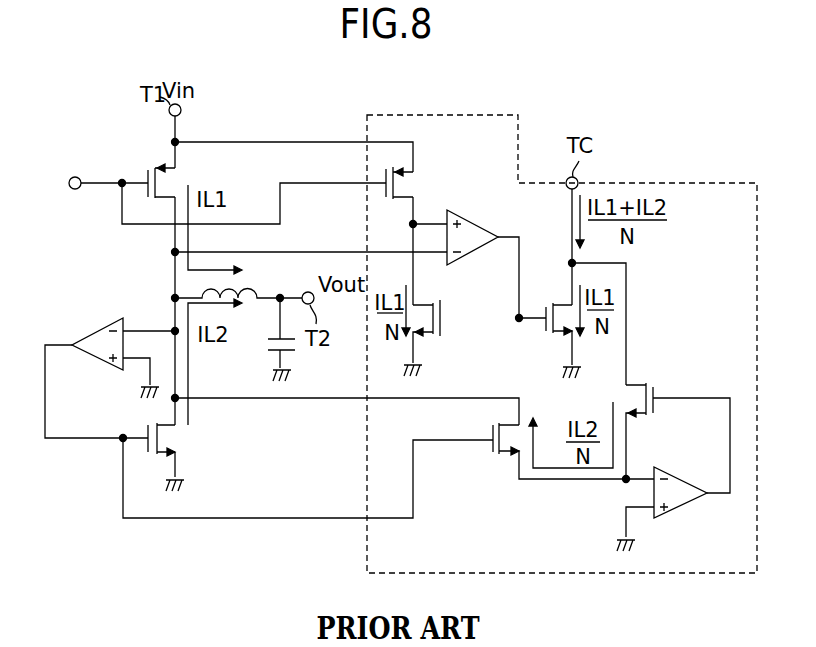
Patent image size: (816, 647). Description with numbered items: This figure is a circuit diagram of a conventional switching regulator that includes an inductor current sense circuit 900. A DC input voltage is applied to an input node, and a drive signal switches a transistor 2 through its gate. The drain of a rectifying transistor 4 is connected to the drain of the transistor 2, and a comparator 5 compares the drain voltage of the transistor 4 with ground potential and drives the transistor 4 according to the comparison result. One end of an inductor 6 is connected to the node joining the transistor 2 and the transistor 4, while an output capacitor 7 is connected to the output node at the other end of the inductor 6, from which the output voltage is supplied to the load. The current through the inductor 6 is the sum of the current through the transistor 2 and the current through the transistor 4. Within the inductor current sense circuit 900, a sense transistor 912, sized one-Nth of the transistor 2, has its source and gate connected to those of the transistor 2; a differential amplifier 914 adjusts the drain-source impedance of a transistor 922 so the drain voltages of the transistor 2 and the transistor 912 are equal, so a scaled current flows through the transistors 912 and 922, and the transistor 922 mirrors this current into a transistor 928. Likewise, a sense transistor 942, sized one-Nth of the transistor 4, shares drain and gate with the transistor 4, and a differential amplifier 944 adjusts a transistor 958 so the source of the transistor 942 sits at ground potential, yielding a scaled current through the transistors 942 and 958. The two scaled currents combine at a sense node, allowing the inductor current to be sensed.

The transistor 2 is at (168, 160).
The rectifying transistor 4 is at (179, 430).
The comparator 5 is at (100, 361).
The inductor 6 is at (255, 291).
The output capacitor 7 is at (268, 356).
The inductor current sense circuit 900 is at (367, 455).
The sense transistor 912 is at (414, 174).
The differential amplifier 914 is at (478, 249).
The transistor 922 is at (443, 323).
The transistor 928 is at (540, 328).
The sense transistor 942 is at (512, 453).
The differential amplifier 944 is at (676, 477).
The transistor 958 is at (638, 384).